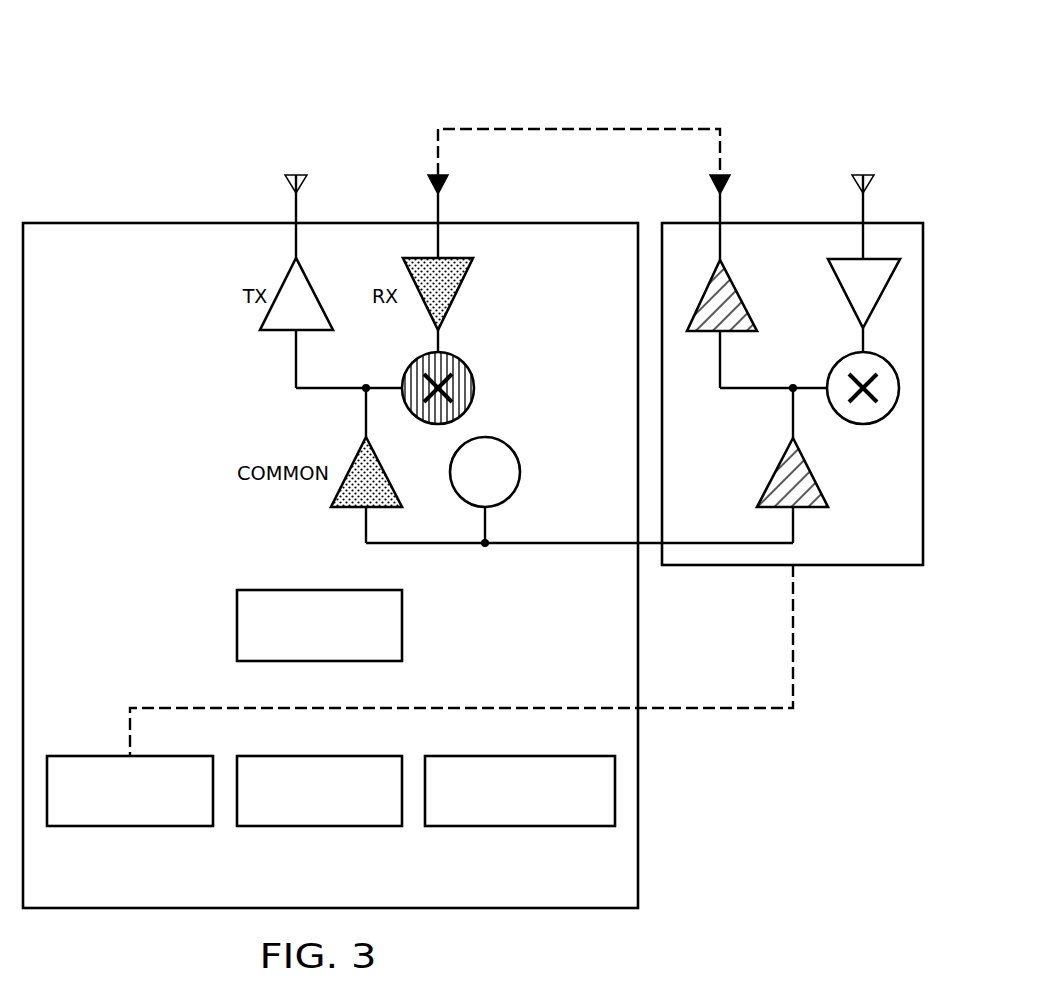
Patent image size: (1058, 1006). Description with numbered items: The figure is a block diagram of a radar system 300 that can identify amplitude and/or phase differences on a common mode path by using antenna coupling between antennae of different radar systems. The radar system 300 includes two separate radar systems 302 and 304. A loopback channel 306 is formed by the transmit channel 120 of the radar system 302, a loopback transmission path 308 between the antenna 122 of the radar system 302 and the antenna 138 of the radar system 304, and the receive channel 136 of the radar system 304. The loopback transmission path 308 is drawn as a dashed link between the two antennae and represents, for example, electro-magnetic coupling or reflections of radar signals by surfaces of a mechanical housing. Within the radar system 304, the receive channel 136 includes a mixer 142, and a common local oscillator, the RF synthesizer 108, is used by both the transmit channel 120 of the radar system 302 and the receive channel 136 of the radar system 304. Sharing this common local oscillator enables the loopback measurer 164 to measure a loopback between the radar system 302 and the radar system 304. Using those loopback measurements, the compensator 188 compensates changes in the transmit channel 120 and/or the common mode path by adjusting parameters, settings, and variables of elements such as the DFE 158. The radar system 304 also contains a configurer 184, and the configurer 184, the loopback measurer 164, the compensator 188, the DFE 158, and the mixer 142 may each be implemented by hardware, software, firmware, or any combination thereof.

The radar system 300 is at (160, 78).
The radar system 304 is at (137, 218).
The radar system 302 is at (854, 574).
The loopback channel 306 is at (618, 109).
The loopback transmission path 308 is at (580, 128).
The antenna 138 is at (450, 187).
The antenna 122 is at (732, 190).
The receive channel 136 is at (392, 387).
The mixer 142 is at (462, 360).
The RF synthesizer 108 is at (521, 472).
The transmit channel 120 is at (757, 391).
The DFE 158 is at (236, 626).
The configurer 184 is at (118, 828).
The loopback measurer 164 is at (319, 828).
The compensator 188 is at (520, 828).